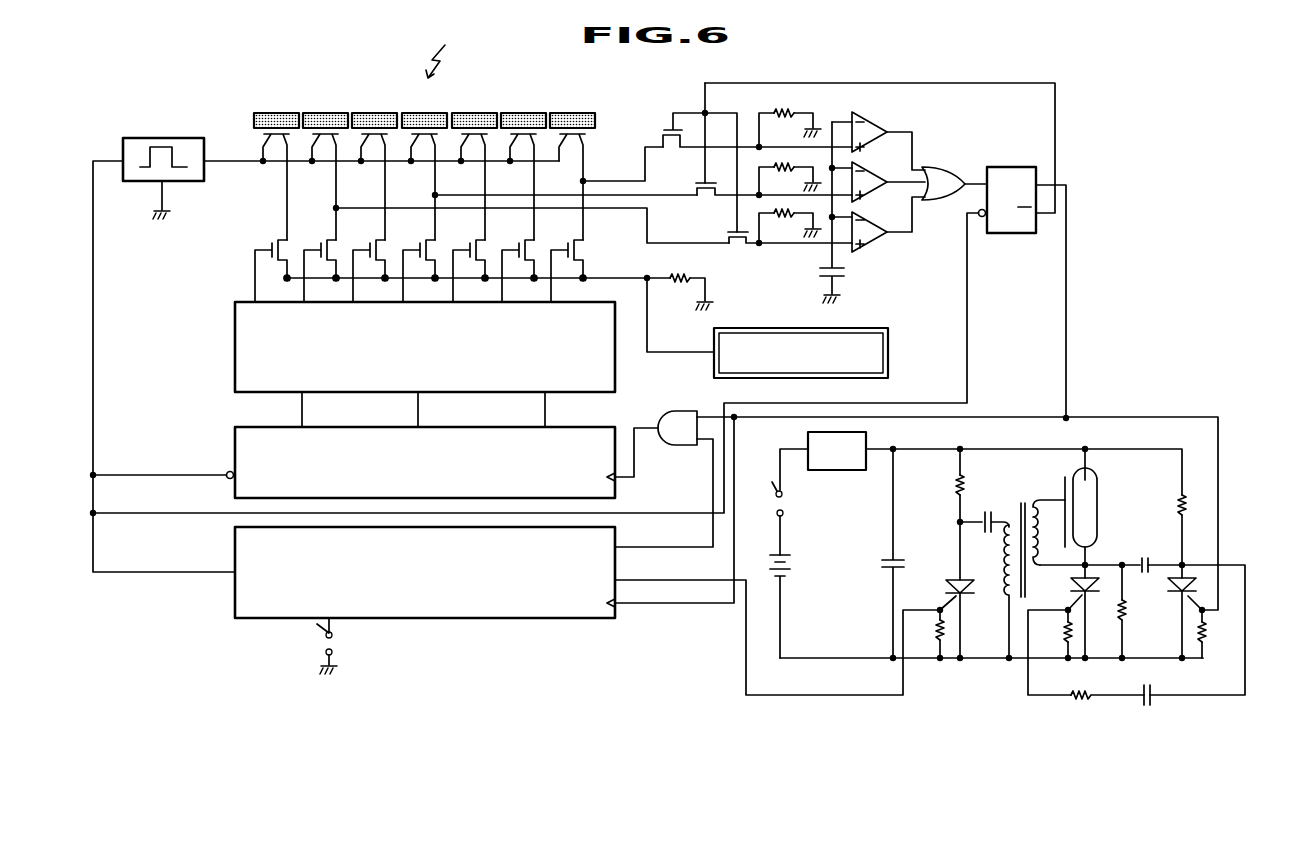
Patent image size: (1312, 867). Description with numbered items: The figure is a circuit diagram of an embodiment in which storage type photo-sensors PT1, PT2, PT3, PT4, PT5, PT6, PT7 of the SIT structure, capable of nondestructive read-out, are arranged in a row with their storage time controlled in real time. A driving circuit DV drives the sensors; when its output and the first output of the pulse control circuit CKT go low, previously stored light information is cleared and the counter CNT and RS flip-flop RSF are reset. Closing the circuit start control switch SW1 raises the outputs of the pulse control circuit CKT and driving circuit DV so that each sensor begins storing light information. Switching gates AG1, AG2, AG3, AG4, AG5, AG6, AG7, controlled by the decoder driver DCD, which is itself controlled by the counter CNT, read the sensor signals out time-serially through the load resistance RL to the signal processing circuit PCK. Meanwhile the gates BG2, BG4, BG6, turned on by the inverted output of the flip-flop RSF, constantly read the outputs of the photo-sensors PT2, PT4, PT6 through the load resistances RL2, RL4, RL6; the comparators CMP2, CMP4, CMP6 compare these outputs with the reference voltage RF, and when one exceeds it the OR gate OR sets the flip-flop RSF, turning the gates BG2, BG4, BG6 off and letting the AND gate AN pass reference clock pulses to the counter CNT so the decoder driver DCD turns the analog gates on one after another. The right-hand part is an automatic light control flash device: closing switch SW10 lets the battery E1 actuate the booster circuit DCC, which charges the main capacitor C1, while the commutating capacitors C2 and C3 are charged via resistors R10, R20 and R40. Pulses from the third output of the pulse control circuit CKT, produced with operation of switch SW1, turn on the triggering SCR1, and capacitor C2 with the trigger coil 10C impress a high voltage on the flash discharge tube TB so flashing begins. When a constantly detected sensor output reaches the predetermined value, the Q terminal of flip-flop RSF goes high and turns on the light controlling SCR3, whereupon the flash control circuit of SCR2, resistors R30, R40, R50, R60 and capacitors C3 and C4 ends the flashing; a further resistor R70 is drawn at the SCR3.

The SIT driving circuit DV is at (177, 138).
The photo-sensor PT7 is at (260, 92).
The photo-sensor PT6 is at (310, 92).
The photo-sensor PT5 is at (360, 92).
The photo-sensor PT4 is at (410, 92).
The photo-sensor PT3 is at (460, 92).
The photo-sensor PT2 is at (510, 92).
The photo-sensor PT1 is at (559, 92).
The switching gate AG7 is at (270, 249).
The switching gate AG6 is at (319, 249).
The switching gate AG5 is at (369, 248).
The switching gate AG4 is at (419, 248).
The switching gate AG3 is at (469, 250).
The switching gate AG2 is at (518, 250).
The switching gate AG1 is at (567, 250).
The gate BG2 is at (664, 128).
The gate BG4 is at (696, 182).
The gate BG6 is at (728, 231).
The load resistance RL2 is at (797, 116).
The load resistance RL4 is at (797, 170).
The load resistance RL6 is at (797, 216).
The reference voltage RF is at (818, 274).
The comparator CMP2 is at (888, 117).
The comparator CMP4 is at (868, 180).
The comparator CMP6 is at (866, 250).
The OR gate OR is at (944, 178).
The RS flip-flop RSF is at (1014, 167).
The load resistance RL is at (671, 286).
The signal processing circuit PCK is at (801, 353).
The decoder driver DCD is at (425, 347).
The counter CNT is at (425, 462).
The pulse control circuit CKT is at (425, 572).
The circuit start control switch SW1 is at (318, 644).
The AND gate AN is at (677, 428).
The booster circuit DCC is at (837, 451).
The switch SW10 is at (787, 505).
The power source battery E1 is at (792, 572).
The main capacitor C1 is at (886, 565).
The resistor R10 is at (954, 487).
The triggering SCR SCR1 is at (950, 586).
The resistor R20 is at (936, 646).
The commutating capacitor C2 is at (987, 534).
The trigger coil 10C is at (1007, 520).
The flash light discharge tube TB is at (1098, 479).
The resistor R30 is at (1178, 509).
The SCR SCR2 is at (1082, 586).
The resistor R60 is at (1064, 641).
The resistor R40 is at (1120, 612).
The commutating capacitor C3 is at (1148, 574).
The light controlling SCR SCR3 is at (1185, 593).
The resistor R70 is at (1205, 653).
The resistor R50 is at (1072, 694).
The capacitor C4 is at (1160, 680).